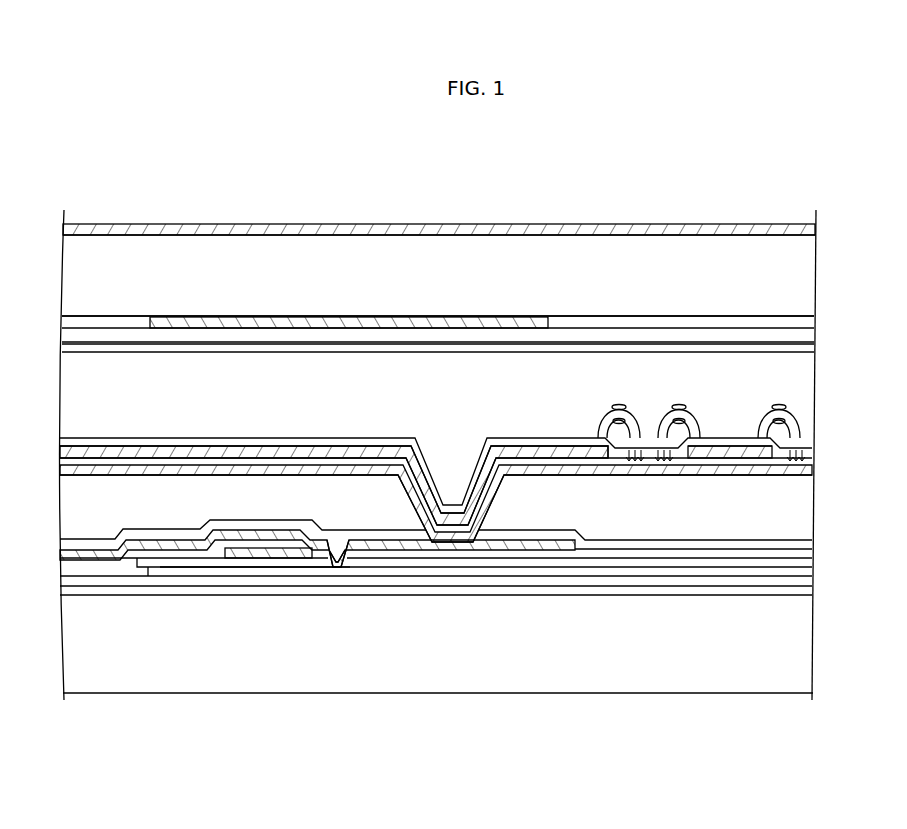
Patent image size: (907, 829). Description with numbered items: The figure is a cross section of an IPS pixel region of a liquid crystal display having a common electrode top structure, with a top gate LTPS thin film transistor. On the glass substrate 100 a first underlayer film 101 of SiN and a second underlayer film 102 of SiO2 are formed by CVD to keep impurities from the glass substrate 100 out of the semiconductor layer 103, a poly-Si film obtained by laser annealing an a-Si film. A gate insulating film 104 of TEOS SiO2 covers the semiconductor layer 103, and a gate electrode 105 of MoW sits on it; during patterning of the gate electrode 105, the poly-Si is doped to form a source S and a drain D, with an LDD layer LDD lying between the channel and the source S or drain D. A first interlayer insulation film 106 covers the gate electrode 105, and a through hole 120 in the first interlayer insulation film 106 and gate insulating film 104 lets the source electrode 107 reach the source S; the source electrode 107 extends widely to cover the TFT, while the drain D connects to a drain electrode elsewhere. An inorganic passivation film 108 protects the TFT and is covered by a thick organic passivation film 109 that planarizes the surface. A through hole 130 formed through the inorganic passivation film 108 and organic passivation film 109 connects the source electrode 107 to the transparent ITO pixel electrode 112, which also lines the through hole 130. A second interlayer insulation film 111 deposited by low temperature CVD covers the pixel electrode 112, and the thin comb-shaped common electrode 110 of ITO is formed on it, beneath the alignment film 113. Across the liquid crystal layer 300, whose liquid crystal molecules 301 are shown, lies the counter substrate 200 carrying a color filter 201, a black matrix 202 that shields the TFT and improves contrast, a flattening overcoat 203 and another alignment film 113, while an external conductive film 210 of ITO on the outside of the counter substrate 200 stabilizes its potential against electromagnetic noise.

The glass substrate 100 is at (800, 647).
The first underlayer film 101 is at (800, 590).
The second underlayer film 102 is at (800, 580).
The semiconductor layer 103 is at (275, 575).
The gate insulating film 104 is at (140, 573).
The gate electrode 105 is at (250, 560).
The first interlayer insulation film 106 is at (800, 549).
The source electrode 107 is at (410, 548).
The inorganic passivation film 108 is at (800, 538).
The organic passivation film 109 is at (800, 500).
The common electrode 110 is at (735, 452).
The second interlayer insulation film 111 is at (812, 452).
The pixel electrode 112 is at (812, 470).
The alignment film 113 is at (797, 350).
The through hole 120 is at (339, 537).
The through hole 130 is at (457, 463).
The counter substrate 200 is at (799, 268).
The color filter 201 is at (608, 318).
The black matrix 202 is at (509, 317).
The overcoat 203 is at (799, 339).
The external conductive film 210 is at (683, 224).
The liquid crystal layer 300 is at (797, 378).
The liquid crystal molecules 301 is at (803, 410).
The drain D is at (178, 575).
The source S is at (335, 573).
The LDD layer LDD is at (217, 573).